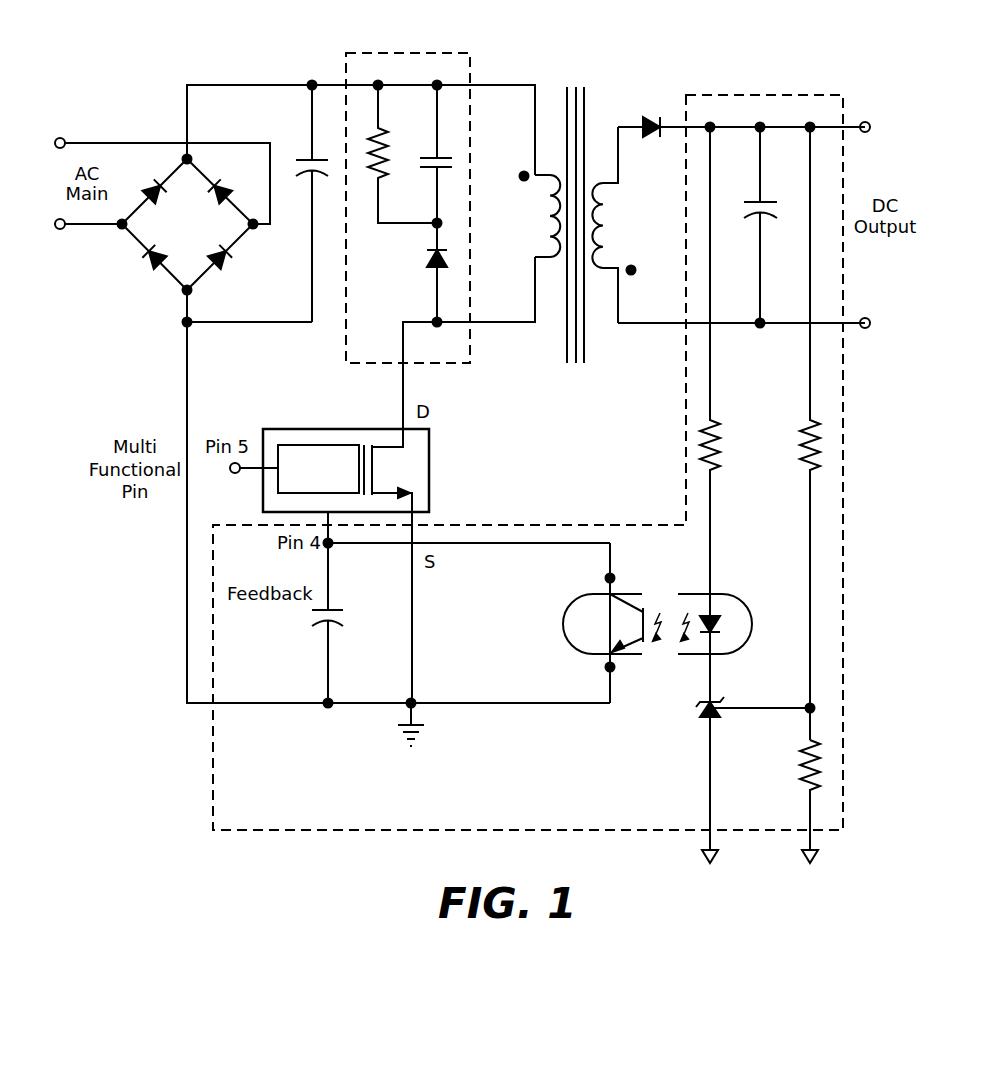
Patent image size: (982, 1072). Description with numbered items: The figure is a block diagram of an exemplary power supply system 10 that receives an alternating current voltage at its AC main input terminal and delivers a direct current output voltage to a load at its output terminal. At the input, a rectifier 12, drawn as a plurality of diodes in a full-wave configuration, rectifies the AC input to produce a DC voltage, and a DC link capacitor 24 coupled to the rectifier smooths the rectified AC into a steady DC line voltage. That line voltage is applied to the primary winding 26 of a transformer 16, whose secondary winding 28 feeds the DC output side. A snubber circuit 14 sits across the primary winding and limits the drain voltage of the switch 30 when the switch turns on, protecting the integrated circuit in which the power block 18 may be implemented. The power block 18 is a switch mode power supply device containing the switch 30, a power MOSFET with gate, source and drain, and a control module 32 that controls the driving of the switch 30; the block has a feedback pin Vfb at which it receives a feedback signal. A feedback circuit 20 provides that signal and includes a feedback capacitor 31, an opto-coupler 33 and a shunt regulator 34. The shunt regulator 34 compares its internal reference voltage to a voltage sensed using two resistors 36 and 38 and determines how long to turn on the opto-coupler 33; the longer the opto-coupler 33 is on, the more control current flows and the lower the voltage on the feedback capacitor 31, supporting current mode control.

The power supply system 10 is at (663, 54).
The rectifier 12 is at (133, 242).
The snubber circuit 14 is at (418, 52).
The transformer 16 is at (587, 103).
The power block 18 is at (351, 543).
The feedback circuit 20 is at (790, 94).
The DC link capacitor 24 is at (297, 168).
The primary winding 26 is at (543, 226).
The secondary winding 28 is at (610, 232).
The switch 30 is at (395, 461).
The feedback capacitor 31 is at (320, 622).
The control module 32 is at (320, 445).
The opto-coupler 33 is at (652, 593).
The shunt regulator 34 is at (718, 697).
The resistor 36 is at (800, 425).
The resistor 38 is at (800, 745).